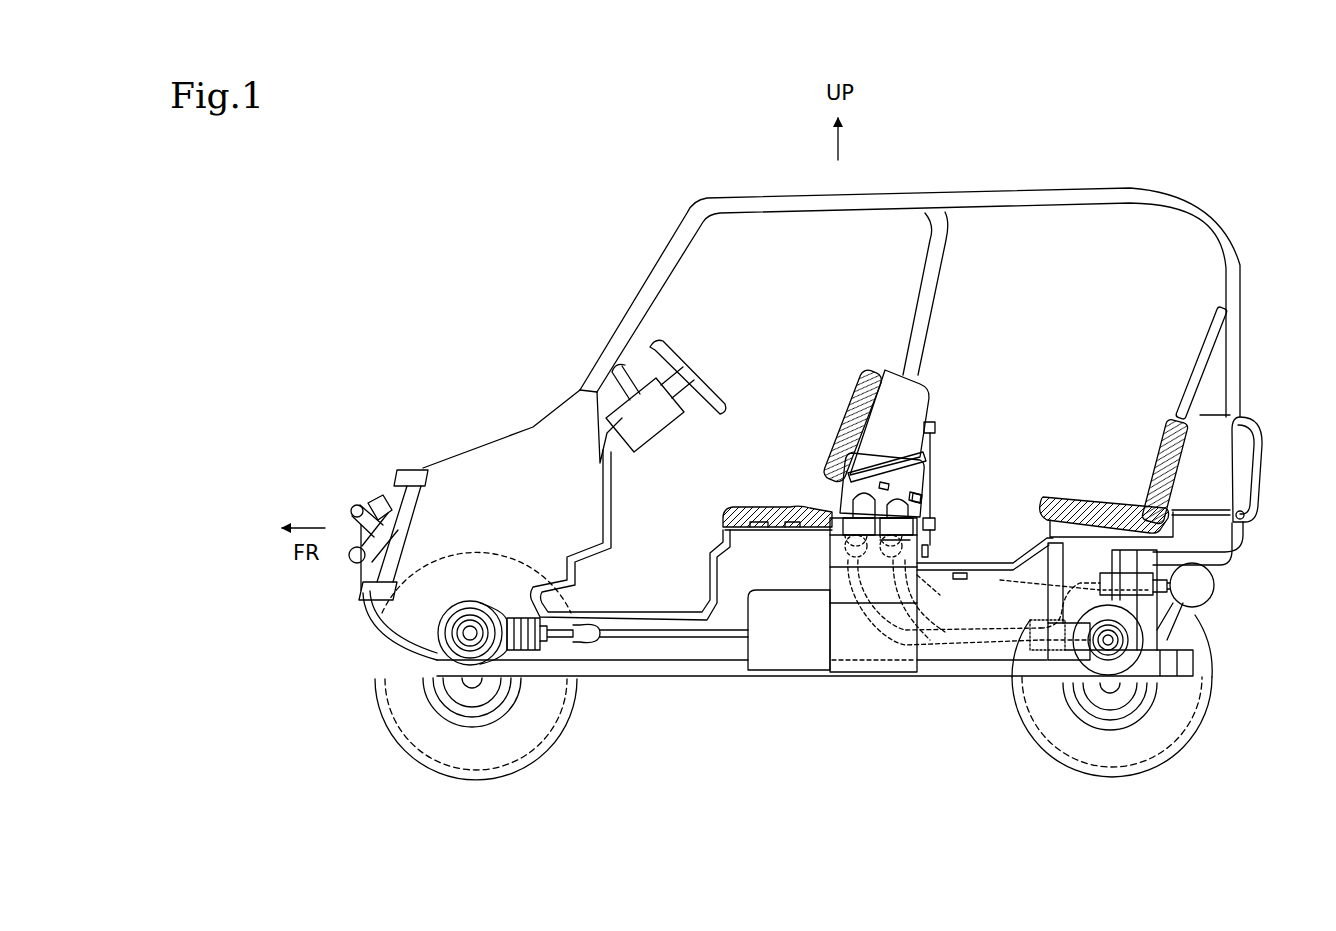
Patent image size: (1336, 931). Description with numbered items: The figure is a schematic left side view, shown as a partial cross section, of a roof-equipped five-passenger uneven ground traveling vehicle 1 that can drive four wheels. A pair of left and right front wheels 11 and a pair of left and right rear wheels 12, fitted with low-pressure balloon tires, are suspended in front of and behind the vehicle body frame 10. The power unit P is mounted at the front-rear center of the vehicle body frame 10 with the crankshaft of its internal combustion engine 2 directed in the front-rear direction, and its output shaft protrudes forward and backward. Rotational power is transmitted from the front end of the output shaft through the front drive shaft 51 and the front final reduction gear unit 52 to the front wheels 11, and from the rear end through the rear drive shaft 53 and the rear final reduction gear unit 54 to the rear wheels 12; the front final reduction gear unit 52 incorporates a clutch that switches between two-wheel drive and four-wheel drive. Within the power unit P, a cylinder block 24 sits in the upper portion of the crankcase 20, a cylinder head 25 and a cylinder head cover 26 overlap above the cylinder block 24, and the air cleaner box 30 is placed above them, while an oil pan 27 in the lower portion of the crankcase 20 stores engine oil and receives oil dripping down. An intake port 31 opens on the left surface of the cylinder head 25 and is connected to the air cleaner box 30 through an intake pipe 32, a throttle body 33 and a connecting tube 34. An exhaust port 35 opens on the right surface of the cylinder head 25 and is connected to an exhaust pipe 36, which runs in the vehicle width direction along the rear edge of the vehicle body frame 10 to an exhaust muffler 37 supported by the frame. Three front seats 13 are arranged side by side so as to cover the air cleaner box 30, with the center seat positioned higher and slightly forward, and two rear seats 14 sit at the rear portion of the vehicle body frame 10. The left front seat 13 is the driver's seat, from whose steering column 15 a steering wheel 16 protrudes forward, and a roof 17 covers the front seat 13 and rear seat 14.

The uneven ground traveling vehicle 1 is at (522, 262).
The internal combustion engine 2 is at (848, 690).
The vehicle body frame 10 is at (665, 677).
The front wheels 11 is at (390, 737).
The rear wheels 12 is at (1190, 740).
The front seat 13 is at (757, 507).
The rear seat 14 is at (1097, 500).
The steering column 15 is at (660, 430).
The steering wheel 16 is at (710, 388).
The roof 17 is at (983, 195).
The crankcase 20 is at (827, 648).
The cylinder block 24 is at (830, 577).
The cylinder head 25 is at (830, 549).
The cylinder head cover 26 is at (827, 510).
The oil pan 27 is at (880, 660).
The air cleaner box 30 is at (935, 440).
The intake port 31 is at (940, 525).
The intake pipe 32 is at (912, 540).
The throttle body 33 is at (905, 520).
The connecting tube 34 is at (905, 498).
The exhaust port 35 is at (930, 553).
The exhaust pipe 36 is at (905, 590).
The exhaust muffler 37 is at (1215, 585).
The front drive shaft 51 is at (627, 638).
The front final reduction gear unit 52 is at (503, 623).
The rear drive shaft 53 is at (955, 615).
The rear final reduction gear unit 54 is at (1055, 650).
The power unit P is at (864, 705).